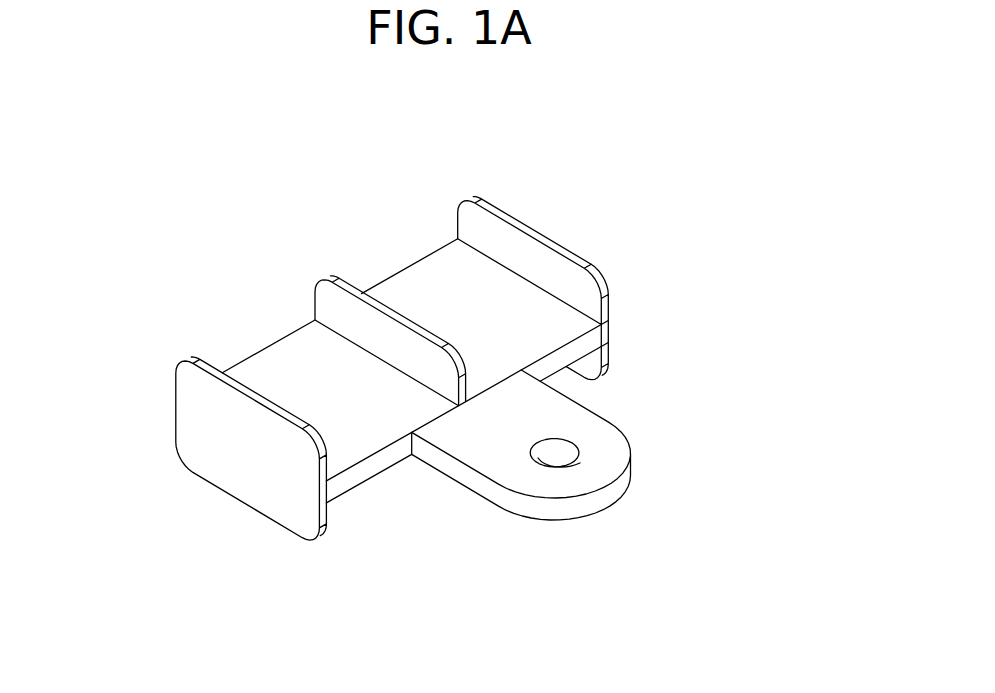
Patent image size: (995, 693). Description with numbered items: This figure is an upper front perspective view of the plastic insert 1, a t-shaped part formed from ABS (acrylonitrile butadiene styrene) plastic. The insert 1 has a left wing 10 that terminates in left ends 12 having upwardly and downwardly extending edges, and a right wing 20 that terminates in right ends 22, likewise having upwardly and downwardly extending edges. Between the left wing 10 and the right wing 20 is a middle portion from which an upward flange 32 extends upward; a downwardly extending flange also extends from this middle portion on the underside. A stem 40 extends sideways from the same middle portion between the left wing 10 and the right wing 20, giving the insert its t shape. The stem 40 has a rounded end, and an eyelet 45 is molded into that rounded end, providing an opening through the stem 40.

The plastic insert 1 is at (217, 173).
The left wing 10 is at (280, 338).
The left ends 12 is at (193, 437).
The right wing 20 is at (422, 272).
The right ends 22 is at (600, 277).
The upward flange 32 is at (458, 354).
The stem 40 is at (485, 495).
The eyelet 45 is at (580, 462).